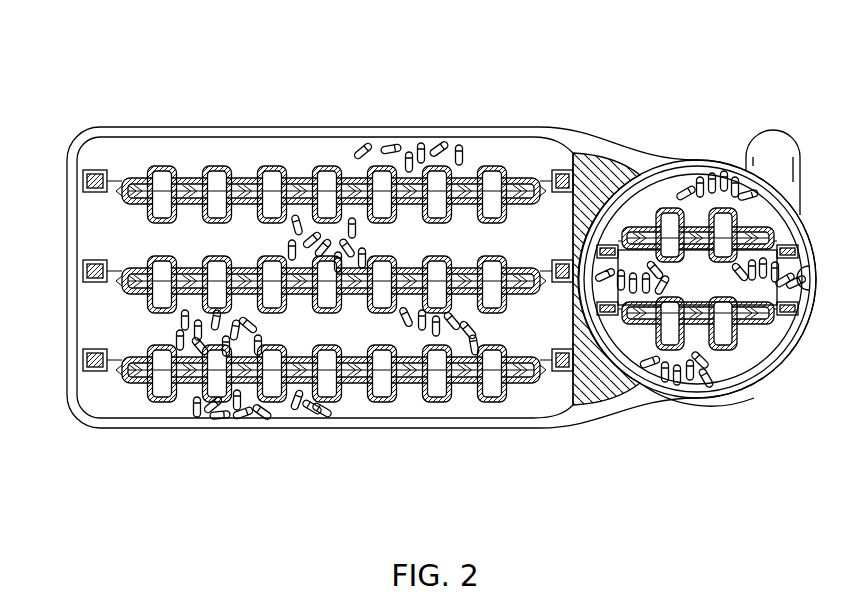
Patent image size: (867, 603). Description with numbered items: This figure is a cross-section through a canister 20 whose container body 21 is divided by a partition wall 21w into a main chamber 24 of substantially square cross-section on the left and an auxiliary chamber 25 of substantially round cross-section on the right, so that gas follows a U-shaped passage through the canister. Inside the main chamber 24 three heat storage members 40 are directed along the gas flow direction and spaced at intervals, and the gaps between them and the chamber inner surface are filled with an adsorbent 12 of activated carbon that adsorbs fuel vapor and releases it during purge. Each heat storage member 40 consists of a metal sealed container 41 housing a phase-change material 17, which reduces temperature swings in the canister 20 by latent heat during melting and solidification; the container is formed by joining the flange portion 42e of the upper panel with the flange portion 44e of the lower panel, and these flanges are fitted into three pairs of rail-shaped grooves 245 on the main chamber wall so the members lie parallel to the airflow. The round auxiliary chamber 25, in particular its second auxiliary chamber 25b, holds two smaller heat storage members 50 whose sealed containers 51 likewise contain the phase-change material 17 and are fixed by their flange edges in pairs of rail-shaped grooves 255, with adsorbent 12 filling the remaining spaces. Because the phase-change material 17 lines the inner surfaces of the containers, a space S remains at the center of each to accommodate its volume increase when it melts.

The adsorbent 12 is at (303, 215).
The phase-change material 17 is at (164, 205).
The canister 20 is at (569, 86).
The container body 21 is at (356, 119).
The partition wall 21w is at (585, 177).
The main chamber 24 is at (97, 227).
The auxiliary chamber 25 is at (765, 352).
The second auxiliary chamber 25b is at (745, 360).
The heat storage member 40 is at (223, 150).
The sealed container 41 is at (492, 165).
The flange portion of upper panel 42e is at (109, 178).
The flange portion of lower panel 44e is at (105, 190).
The heat storage member 50 is at (660, 188).
The sealed container 51 is at (757, 337).
The rail-shaped groove 245 is at (97, 170).
The rail-shaped groove 255 is at (610, 245).
The space S is at (272, 168).